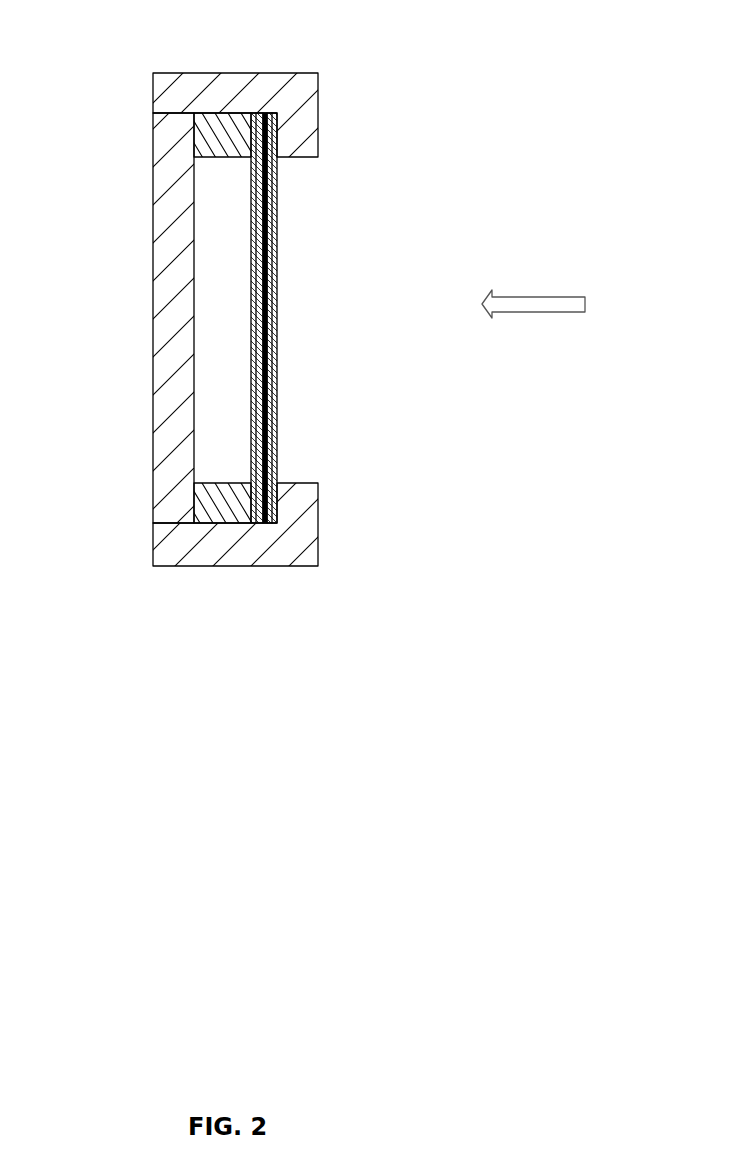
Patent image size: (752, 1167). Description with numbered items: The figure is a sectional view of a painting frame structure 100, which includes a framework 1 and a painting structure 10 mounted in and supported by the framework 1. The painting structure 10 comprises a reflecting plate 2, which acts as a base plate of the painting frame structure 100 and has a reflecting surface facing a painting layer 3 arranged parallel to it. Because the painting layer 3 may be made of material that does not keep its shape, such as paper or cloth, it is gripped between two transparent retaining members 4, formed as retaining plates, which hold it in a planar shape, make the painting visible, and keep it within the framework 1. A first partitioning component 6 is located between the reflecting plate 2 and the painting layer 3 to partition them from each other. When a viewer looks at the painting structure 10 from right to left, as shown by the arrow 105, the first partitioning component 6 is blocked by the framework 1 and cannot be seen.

The framework 1 is at (210, 73).
The reflecting plate 2 is at (175, 317).
The painting layer 3 is at (278, 296).
The retaining members 4 is at (277, 220).
The first partitioning component 6 is at (258, 112).
The painting structure 10 is at (108, 168).
The painting frame structure 100 is at (553, 55).
The arrow 105 is at (568, 297).